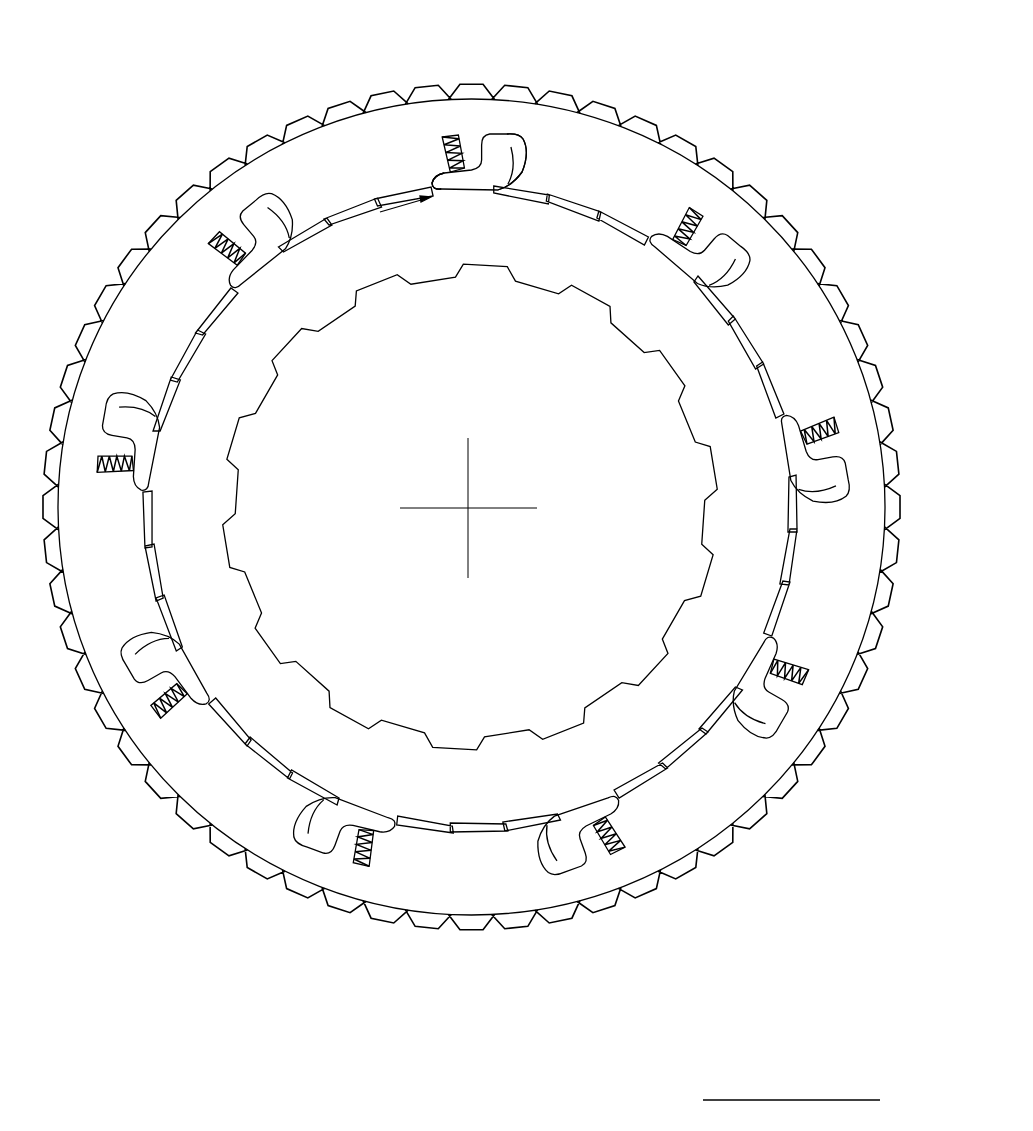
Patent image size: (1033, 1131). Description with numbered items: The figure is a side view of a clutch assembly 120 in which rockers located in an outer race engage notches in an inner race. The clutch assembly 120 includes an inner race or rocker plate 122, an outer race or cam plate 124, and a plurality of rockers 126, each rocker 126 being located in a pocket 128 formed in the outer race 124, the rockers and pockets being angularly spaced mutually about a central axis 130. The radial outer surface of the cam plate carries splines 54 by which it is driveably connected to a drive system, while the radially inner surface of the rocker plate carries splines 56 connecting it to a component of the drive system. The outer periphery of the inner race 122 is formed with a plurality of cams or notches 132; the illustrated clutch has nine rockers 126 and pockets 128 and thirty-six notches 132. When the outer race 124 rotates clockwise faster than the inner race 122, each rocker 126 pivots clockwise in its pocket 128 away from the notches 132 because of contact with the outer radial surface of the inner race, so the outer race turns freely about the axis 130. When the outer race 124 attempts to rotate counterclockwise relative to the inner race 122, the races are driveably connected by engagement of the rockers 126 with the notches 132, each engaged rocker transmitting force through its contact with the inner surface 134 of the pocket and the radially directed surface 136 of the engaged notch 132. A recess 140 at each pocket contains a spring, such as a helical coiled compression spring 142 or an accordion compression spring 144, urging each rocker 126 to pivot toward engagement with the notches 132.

The splines 54 is at (870, 350).
The splines 56 is at (688, 620).
The clutch assembly 120 is at (272, 72).
The inner race 122 is at (640, 322).
The outer race 124 is at (640, 140).
The rocker 126 is at (262, 195).
The pocket 128 is at (512, 130).
The central axis 130 is at (468, 510).
The notches 132 is at (776, 380).
The inner surface of the pocket 134 is at (527, 133).
The radially directed surface 136 is at (378, 198).
The recess 140 is at (443, 137).
The helical coiled compression spring 142 is at (429, 184).
The accordion compression spring 144 is at (438, 181).